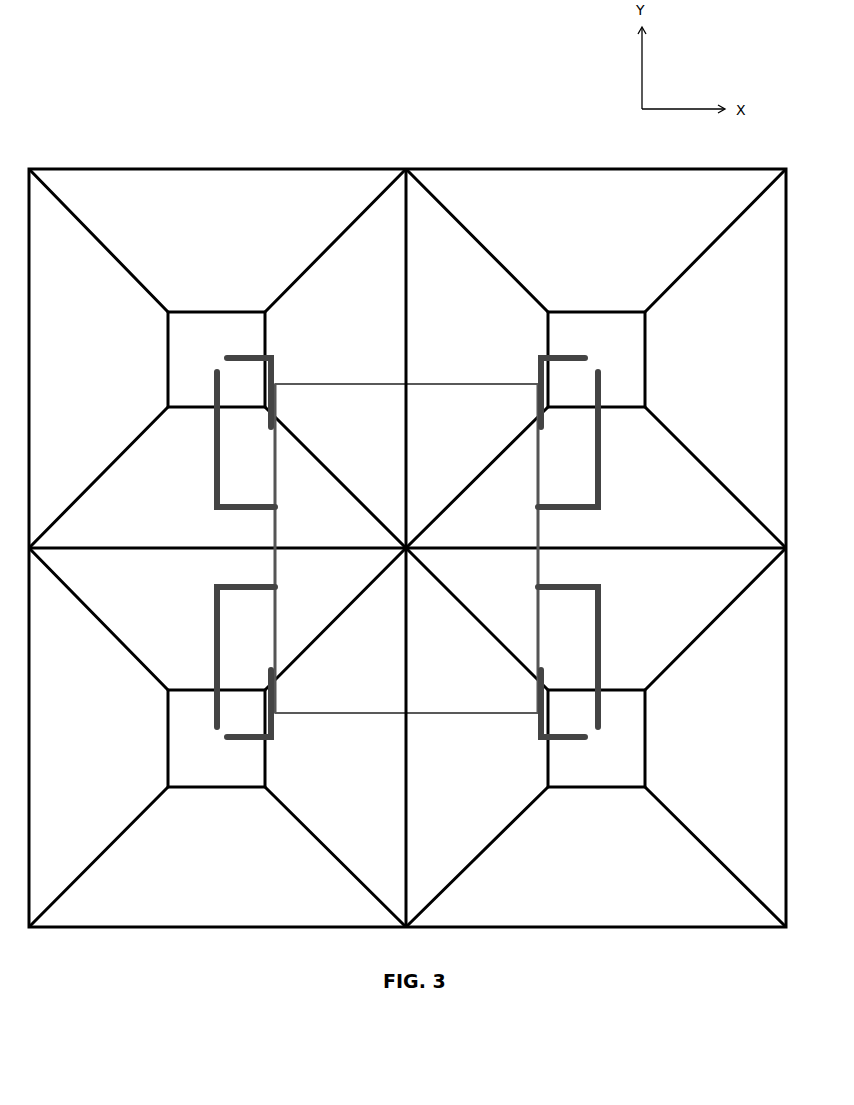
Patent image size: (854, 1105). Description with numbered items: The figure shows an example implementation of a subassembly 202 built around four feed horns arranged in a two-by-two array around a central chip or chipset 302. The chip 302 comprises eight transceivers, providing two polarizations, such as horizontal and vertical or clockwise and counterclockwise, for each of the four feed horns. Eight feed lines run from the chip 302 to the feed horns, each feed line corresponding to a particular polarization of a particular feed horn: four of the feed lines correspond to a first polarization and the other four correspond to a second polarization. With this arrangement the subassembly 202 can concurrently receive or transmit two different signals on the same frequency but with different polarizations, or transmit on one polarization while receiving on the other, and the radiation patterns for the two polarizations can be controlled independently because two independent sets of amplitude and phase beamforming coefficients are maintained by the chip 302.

The subassembly 202 is at (110, 86).
The chip (or chipset) 302 is at (422, 566).